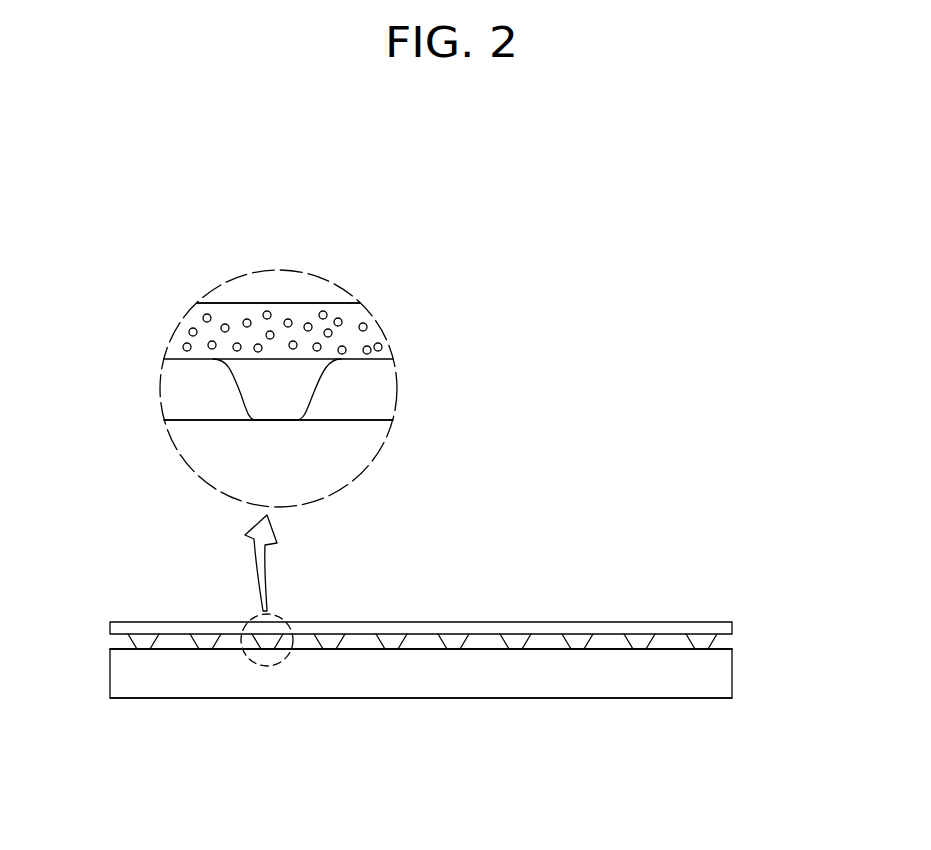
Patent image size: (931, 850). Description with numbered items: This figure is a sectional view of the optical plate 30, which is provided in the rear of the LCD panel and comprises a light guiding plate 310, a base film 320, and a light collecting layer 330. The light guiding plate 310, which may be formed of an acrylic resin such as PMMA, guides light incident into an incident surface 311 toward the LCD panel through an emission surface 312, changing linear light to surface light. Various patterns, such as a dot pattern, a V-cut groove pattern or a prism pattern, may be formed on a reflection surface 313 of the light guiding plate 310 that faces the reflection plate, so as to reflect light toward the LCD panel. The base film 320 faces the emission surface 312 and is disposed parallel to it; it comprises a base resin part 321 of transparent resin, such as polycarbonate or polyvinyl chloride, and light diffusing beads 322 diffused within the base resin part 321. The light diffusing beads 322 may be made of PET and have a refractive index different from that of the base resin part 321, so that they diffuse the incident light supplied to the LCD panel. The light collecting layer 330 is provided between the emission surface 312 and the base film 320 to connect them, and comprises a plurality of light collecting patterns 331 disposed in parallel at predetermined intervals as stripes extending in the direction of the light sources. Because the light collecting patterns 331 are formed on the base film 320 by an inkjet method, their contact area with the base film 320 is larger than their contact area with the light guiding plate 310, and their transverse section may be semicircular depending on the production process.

The optical plate 30 is at (152, 262).
The light guiding plate 310 is at (376, 447).
The incident surface 311 is at (110, 670).
The emission surface 312 is at (360, 648).
The reflection surface 313 is at (382, 700).
The base film 320 is at (376, 327).
The base resin part 321 is at (230, 310).
The light diffusing beads 322 is at (322, 312).
The light collecting layer 330 is at (108, 636).
The light collecting patterns 331 is at (516, 641).